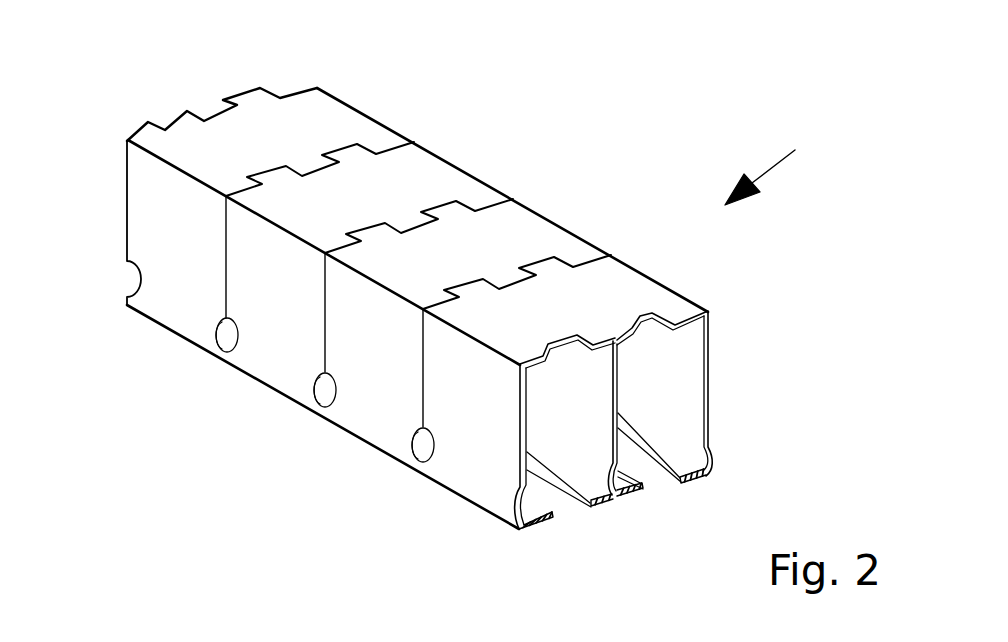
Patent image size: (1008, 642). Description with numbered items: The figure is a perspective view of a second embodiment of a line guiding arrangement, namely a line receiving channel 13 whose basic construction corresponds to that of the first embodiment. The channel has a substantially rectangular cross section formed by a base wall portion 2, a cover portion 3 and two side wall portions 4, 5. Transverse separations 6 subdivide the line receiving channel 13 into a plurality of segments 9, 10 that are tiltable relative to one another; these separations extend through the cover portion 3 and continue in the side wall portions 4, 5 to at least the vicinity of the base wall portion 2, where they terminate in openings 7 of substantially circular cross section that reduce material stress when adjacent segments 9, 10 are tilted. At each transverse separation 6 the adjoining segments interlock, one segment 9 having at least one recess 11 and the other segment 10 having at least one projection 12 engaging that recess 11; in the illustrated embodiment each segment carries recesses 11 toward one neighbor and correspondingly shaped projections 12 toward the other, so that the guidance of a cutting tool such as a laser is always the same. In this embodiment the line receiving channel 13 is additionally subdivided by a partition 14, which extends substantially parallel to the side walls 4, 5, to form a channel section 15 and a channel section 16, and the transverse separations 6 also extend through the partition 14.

The base wall portion 2 is at (680, 483).
The cover portion 3 is at (622, 282).
The side wall portion 4 is at (697, 367).
The side wall portion 5 is at (482, 477).
The transverse separations 6 is at (227, 270).
The openings 7 is at (225, 325).
The segment 9 is at (368, 379).
The segment 10 is at (264, 322).
The recess 11 is at (265, 167).
The projection 12 is at (175, 123).
The line receiving channel 13 is at (784, 159).
The partition 14 is at (603, 412).
The channel section 15 is at (648, 413).
The channel section 16 is at (564, 460).